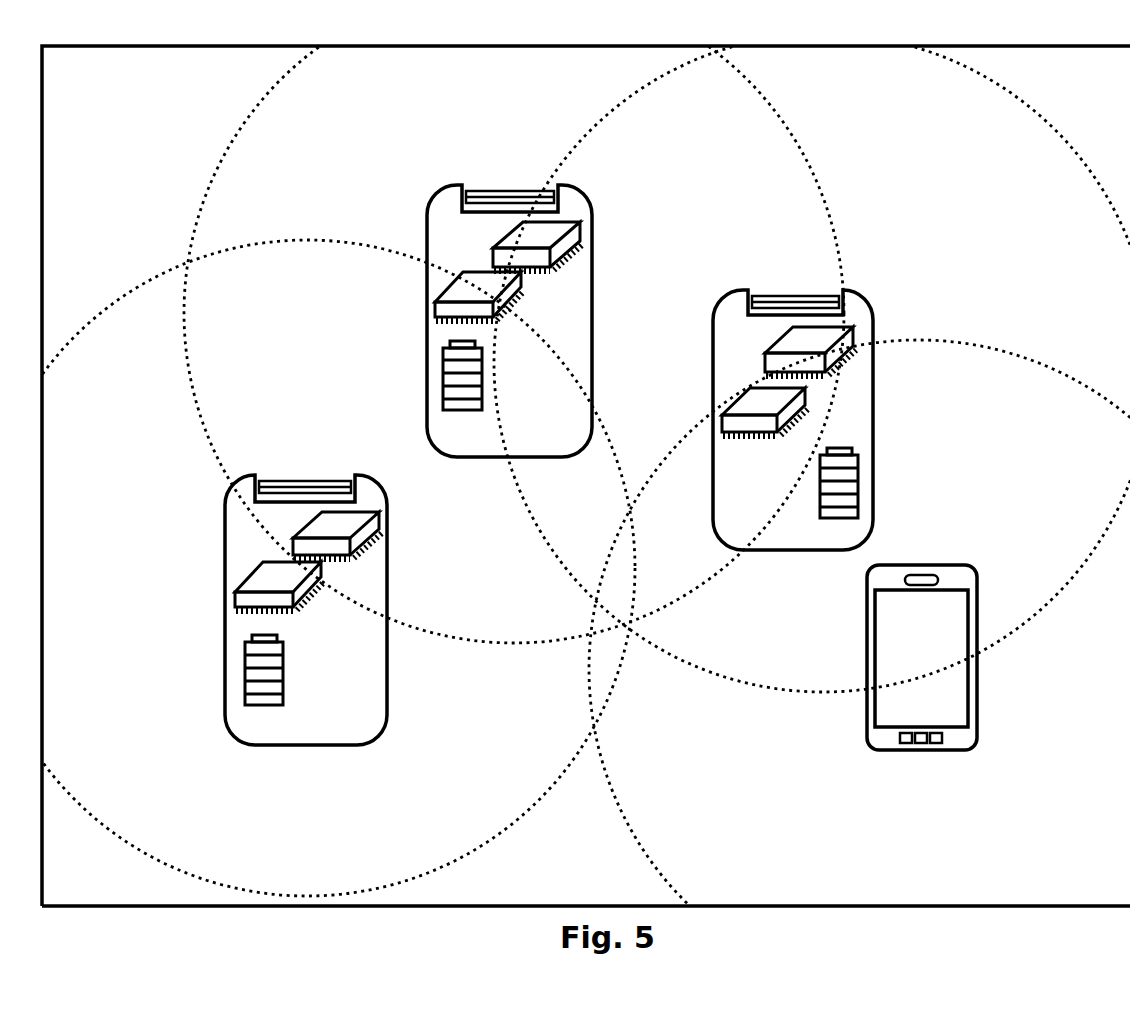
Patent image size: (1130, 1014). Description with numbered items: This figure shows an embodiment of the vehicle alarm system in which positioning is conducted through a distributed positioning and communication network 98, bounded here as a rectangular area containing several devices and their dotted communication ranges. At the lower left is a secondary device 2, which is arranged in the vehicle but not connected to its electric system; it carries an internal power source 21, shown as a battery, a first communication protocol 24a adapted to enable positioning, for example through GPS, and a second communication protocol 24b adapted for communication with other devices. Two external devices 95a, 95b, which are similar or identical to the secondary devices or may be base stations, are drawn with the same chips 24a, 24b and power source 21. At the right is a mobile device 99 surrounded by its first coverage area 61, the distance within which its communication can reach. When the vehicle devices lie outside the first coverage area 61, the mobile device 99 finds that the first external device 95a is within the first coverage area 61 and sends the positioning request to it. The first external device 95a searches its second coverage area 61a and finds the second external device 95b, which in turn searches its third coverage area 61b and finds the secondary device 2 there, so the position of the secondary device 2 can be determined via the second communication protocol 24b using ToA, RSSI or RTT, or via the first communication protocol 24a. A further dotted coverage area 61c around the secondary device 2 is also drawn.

The positioning and communication network 98 is at (100, 47).
The first external device 95a is at (728, 291).
The second external device 95b is at (430, 245).
The secondary device 2 is at (293, 746).
The first communication protocol 24a is at (435, 305).
The second communication protocol 24b is at (580, 247).
The power source 21 is at (443, 378).
The mobile device 99 is at (923, 751).
The first coverage area 61 is at (1047, 362).
The second coverage area 61a is at (958, 58).
The third coverage area 61b is at (468, 641).
The communication range of sensor device 61c is at (77, 328).